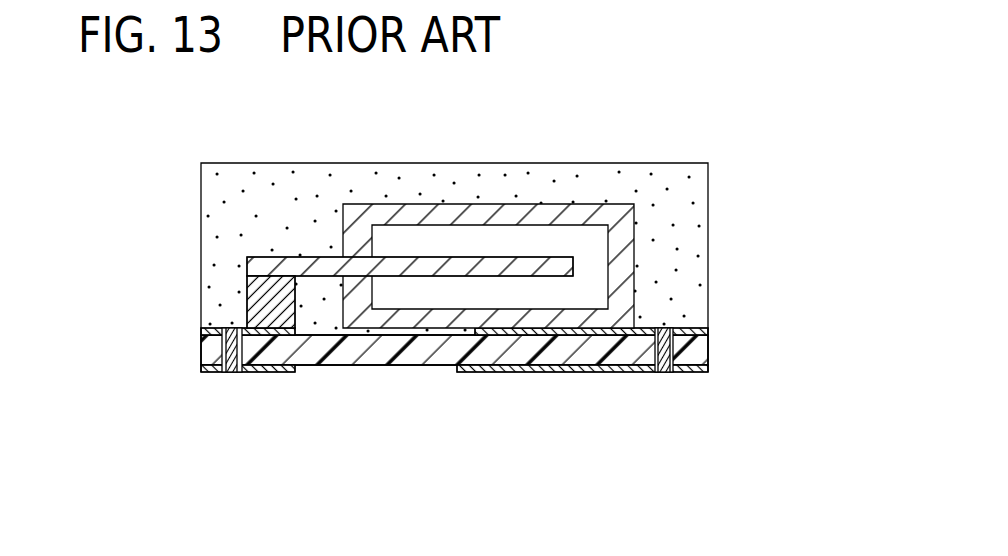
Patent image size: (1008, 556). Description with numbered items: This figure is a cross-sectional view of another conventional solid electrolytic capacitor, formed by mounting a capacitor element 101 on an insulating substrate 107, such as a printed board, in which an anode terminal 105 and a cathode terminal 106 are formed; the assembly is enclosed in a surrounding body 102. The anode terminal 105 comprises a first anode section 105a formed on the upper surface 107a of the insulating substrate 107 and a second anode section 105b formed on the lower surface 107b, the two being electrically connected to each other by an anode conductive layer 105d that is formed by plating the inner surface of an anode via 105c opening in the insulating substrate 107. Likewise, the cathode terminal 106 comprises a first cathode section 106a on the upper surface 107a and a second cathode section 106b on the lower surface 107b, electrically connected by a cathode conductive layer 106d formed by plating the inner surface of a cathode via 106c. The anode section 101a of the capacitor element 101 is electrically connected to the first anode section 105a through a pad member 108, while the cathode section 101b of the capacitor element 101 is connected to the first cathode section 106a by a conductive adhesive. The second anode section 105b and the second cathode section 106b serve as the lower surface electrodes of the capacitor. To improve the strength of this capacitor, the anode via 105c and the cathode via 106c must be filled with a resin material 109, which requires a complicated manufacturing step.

The capacitor element 101 is at (531, 203).
The anode section 101a is at (312, 267).
The cathode section 101b is at (445, 333).
The sealing resin 102 is at (668, 185).
The anode terminal 105 is at (102, 295).
The first anode section 105a is at (205, 328).
The second anode section 105b is at (205, 372).
The anode via 105c is at (228, 372).
The anode conductive layer 105d is at (215, 348).
The cathode terminal 106 is at (808, 295).
The first cathode section 106a is at (690, 330).
The second cathode section 106b is at (692, 372).
The cathode via 106c is at (670, 373).
The cathode conductive layer 106d is at (675, 350).
The insulating substrate 107 is at (402, 350).
The upper surface 107a is at (323, 335).
The lower surface 107b is at (365, 372).
The pad member 108 is at (260, 290).
The resin material 109 is at (237, 372).